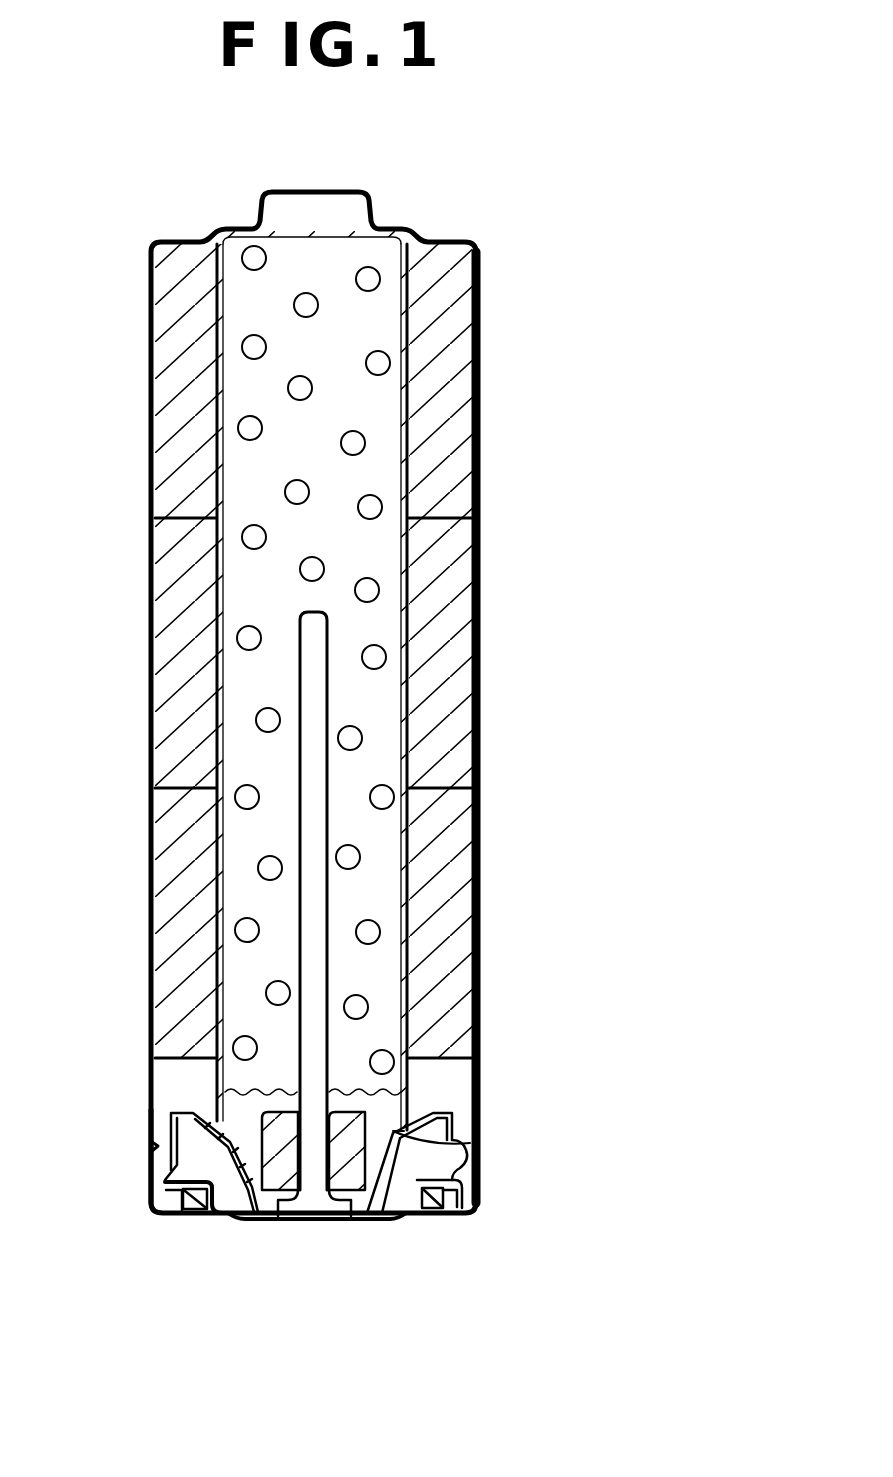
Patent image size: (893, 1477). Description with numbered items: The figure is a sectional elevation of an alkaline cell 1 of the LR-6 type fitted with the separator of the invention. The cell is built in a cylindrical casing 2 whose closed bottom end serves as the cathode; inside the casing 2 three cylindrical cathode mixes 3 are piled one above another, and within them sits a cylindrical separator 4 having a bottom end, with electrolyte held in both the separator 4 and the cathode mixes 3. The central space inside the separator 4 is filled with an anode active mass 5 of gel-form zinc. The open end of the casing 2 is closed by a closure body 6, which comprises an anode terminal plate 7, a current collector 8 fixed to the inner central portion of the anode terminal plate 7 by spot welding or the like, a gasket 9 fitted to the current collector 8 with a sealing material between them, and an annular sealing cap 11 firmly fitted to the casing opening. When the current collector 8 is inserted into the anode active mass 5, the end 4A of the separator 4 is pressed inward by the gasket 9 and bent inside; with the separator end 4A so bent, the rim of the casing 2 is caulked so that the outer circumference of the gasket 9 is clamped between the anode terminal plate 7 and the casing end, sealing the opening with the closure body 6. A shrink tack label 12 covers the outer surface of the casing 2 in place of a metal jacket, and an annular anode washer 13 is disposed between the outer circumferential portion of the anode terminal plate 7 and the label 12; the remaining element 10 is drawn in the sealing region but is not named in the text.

The alkaline battery 1 is at (570, 220).
The cylindrical casing 2 is at (368, 215).
The cylindrical cathode mixes 3 is at (447, 432).
The cylindrical separator 4 is at (408, 337).
The end of the separator 4A is at (396, 1128).
The anode active mass 5 is at (362, 558).
The closure body 6 is at (360, 1247).
The anode terminal plate 7 is at (280, 1220).
The current collector 8 is at (312, 892).
The gasket 9 is at (148, 1114).
The insulating ring 10 is at (400, 1221).
The annular sealing cap 11 is at (252, 1145).
The label 12 is at (148, 1156).
The annular anode washer 13 is at (204, 1217).